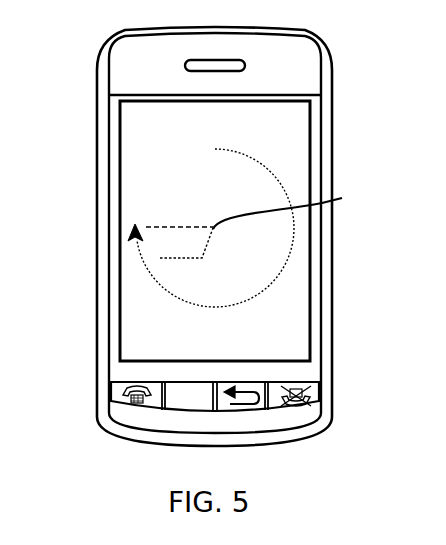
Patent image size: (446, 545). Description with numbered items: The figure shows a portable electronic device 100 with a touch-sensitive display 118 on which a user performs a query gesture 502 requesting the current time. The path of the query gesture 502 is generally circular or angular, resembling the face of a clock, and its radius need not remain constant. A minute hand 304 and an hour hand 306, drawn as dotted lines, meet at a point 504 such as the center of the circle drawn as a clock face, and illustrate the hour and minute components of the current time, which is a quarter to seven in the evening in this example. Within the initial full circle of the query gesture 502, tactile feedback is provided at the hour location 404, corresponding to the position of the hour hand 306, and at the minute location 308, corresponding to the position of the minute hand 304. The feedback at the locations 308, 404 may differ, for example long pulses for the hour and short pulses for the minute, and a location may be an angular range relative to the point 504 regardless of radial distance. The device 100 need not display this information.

The portable electronic device 100 is at (105, 468).
The touch-sensitive display 118 is at (307, 132).
The minute hand 304 is at (167, 223).
The hour hand 306 is at (160, 258).
The minute location 308 is at (129, 227).
The hour location 404 is at (185, 301).
The query gesture 502 is at (283, 180).
The point 504 is at (295, 209).